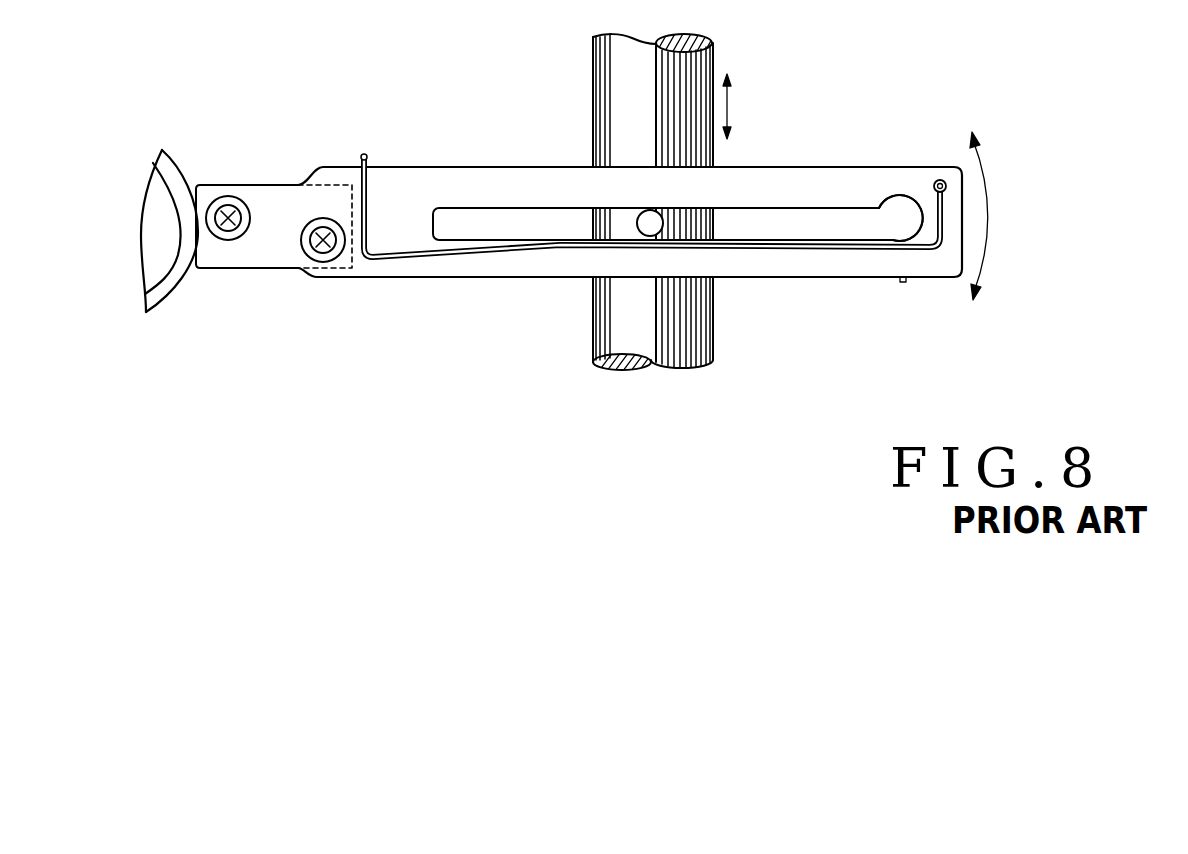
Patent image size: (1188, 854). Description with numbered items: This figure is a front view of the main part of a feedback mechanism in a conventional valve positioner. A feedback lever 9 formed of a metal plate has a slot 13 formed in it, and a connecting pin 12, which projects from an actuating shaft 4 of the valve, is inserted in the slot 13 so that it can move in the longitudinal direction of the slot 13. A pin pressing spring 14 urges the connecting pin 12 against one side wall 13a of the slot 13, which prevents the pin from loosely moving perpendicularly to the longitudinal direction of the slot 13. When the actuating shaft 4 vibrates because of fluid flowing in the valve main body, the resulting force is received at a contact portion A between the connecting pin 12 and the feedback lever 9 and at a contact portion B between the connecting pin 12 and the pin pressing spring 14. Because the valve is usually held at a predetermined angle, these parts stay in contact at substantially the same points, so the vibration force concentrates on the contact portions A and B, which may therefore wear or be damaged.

The actuating shaft 4 is at (592, 80).
The feedback lever 9 is at (402, 158).
The connecting pin 12 is at (638, 231).
The slot 13 is at (497, 220).
The side wall 13a is at (777, 213).
The pin pressing spring 14 is at (773, 260).
The contact portion A is at (648, 208).
The contact portion B is at (649, 238).